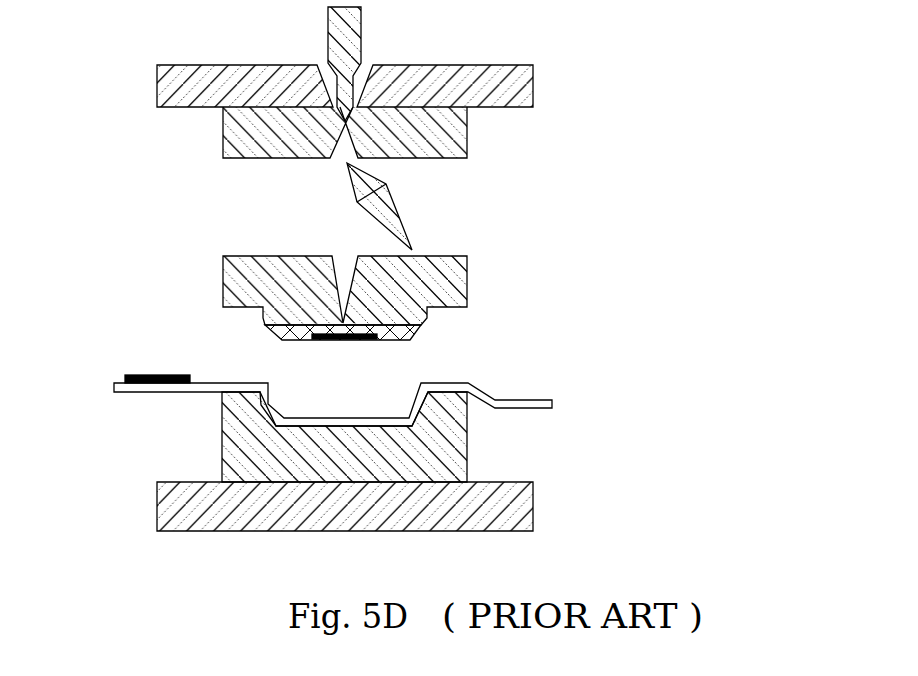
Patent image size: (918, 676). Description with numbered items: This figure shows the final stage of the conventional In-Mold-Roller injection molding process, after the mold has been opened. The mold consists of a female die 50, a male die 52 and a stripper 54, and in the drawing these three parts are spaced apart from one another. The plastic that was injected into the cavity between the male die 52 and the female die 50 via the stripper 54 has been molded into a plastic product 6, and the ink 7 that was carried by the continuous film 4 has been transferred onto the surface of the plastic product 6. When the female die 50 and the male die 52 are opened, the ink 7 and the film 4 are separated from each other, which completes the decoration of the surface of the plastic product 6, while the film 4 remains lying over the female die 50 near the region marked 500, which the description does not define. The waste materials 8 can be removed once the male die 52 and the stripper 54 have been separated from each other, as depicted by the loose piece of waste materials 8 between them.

The stripper 54 is at (240, 135).
The waste materials 8 is at (376, 202).
The male die 52 is at (237, 283).
The plastic product 6 is at (413, 333).
The ink 7 is at (360, 343).
The female die 50 is at (233, 440).
The film 4 is at (537, 405).
The cavity / recess 500 is at (293, 422).